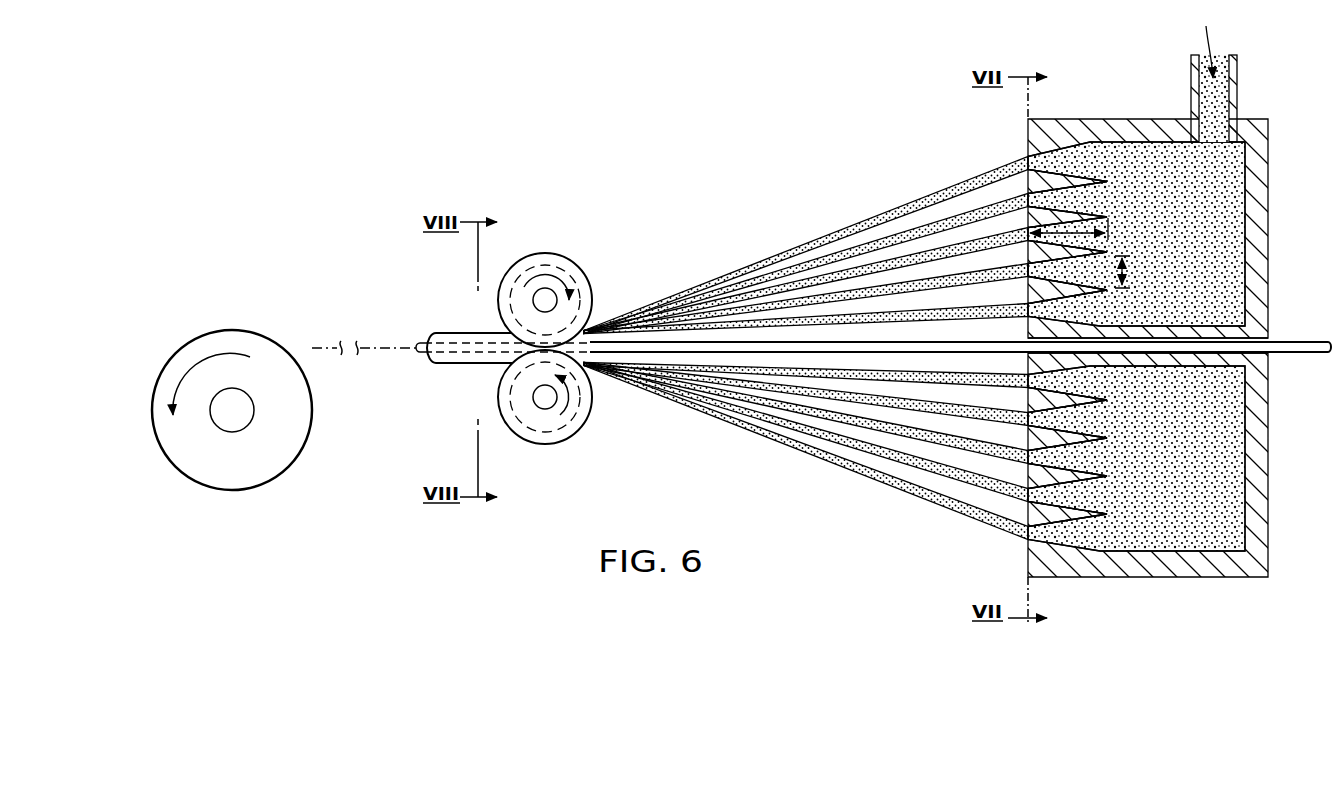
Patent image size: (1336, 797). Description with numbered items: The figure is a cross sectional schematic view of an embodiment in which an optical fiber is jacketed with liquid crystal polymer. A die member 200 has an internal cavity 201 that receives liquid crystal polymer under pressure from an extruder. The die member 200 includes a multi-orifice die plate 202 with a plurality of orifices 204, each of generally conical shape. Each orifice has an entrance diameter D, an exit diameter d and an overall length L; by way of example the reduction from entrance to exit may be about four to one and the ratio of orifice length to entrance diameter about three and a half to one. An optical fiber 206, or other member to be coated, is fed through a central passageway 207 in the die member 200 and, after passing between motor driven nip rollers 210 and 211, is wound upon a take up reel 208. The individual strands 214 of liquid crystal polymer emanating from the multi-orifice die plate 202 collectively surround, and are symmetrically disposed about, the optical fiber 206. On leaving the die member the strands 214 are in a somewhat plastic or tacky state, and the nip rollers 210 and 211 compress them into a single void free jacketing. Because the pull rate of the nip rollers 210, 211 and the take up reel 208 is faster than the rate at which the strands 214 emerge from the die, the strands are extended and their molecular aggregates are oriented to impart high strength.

The die member 200 is at (1132, 301).
The internal cavity 201 is at (1232, 457).
The multi-orifice die plate 202 is at (1080, 124).
The orifices 204 is at (1090, 196).
The optical fiber 206 is at (1283, 340).
The central passageway 207 is at (1158, 356).
The take up reel 208 is at (283, 457).
The nip roller 210 is at (572, 266).
The nip roller 211 is at (578, 427).
The individual strands 214 is at (815, 272).
The orifice length L is at (1110, 226).
The entrance diameter D is at (1130, 269).
The exit diameter d is at (1025, 269).